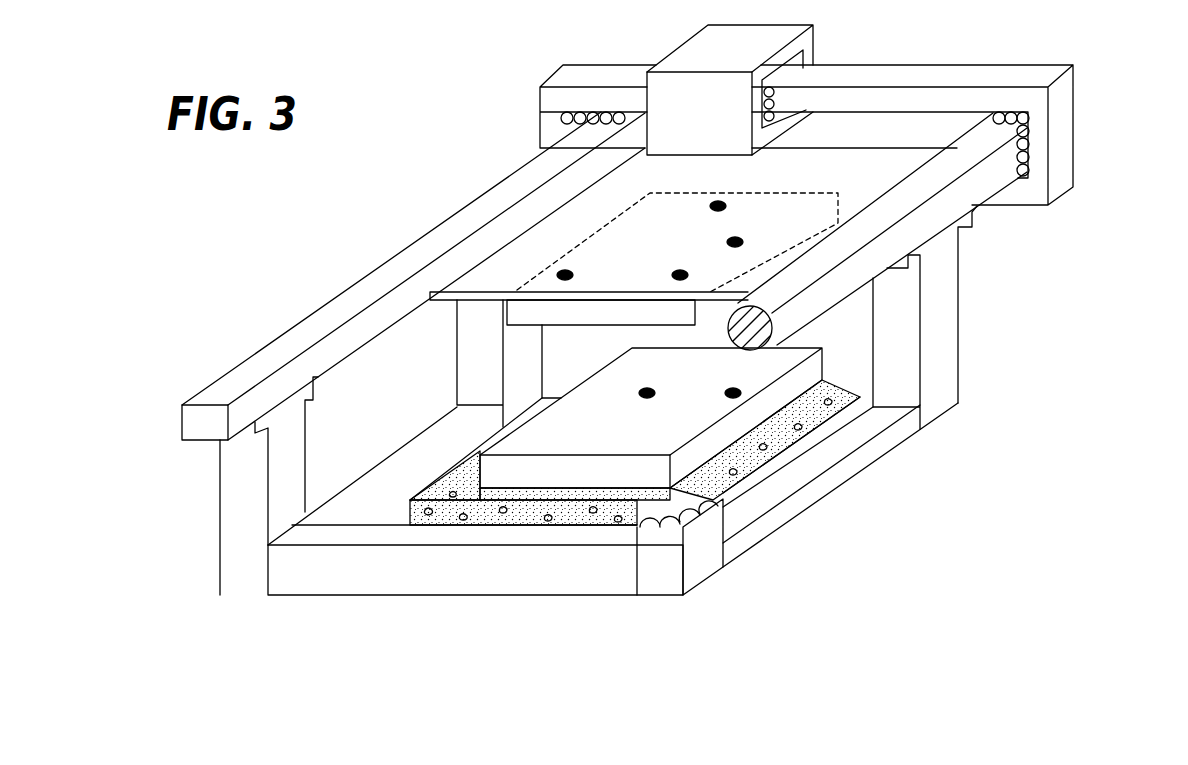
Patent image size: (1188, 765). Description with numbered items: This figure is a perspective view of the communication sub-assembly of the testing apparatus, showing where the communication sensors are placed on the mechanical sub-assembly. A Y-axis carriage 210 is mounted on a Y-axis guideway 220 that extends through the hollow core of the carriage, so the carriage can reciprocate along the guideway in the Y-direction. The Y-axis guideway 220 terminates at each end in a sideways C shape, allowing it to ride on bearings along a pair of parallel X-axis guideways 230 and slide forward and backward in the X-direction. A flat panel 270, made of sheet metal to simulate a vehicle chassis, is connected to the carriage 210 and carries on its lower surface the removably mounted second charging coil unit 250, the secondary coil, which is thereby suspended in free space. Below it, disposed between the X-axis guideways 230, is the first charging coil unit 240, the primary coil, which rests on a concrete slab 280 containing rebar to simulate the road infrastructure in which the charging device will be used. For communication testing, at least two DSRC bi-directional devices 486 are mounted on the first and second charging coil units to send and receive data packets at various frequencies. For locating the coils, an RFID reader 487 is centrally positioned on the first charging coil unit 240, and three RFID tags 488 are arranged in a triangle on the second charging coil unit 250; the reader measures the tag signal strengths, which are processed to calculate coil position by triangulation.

The Y-axis carriage 210 is at (678, 130).
The Y-axis guideway 220 is at (1064, 133).
The X-axis guideways 230 is at (268, 363).
The first charging coil unit 240 is at (613, 437).
The second charging coil unit 250 is at (557, 313).
The flat panel 270 is at (472, 278).
The concrete slab 280 is at (430, 525).
The DSRC bi-directional devices 486 is at (735, 242).
The RFID reader 487 is at (647, 393).
The RFID tags 488 is at (718, 206).